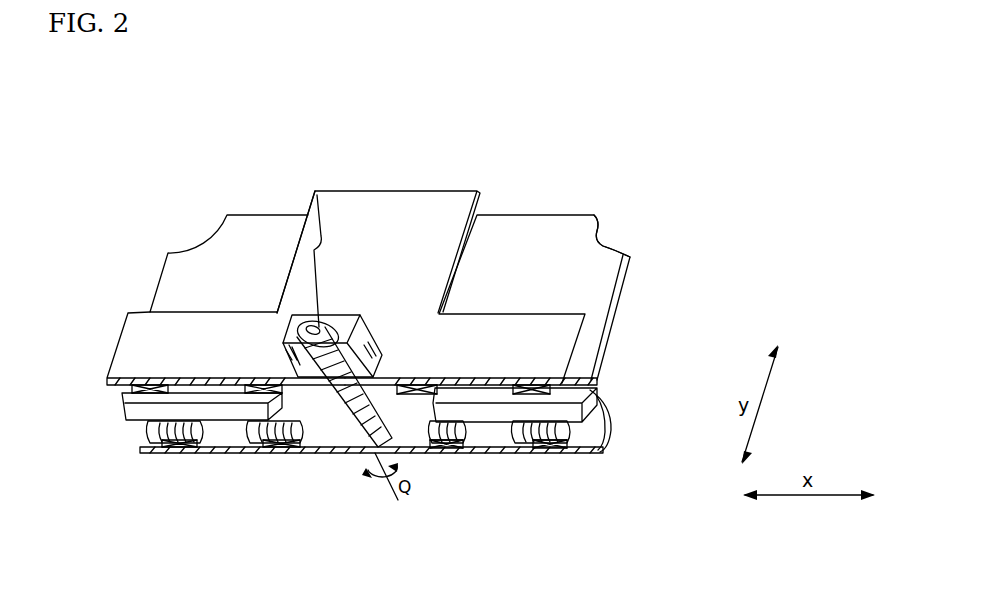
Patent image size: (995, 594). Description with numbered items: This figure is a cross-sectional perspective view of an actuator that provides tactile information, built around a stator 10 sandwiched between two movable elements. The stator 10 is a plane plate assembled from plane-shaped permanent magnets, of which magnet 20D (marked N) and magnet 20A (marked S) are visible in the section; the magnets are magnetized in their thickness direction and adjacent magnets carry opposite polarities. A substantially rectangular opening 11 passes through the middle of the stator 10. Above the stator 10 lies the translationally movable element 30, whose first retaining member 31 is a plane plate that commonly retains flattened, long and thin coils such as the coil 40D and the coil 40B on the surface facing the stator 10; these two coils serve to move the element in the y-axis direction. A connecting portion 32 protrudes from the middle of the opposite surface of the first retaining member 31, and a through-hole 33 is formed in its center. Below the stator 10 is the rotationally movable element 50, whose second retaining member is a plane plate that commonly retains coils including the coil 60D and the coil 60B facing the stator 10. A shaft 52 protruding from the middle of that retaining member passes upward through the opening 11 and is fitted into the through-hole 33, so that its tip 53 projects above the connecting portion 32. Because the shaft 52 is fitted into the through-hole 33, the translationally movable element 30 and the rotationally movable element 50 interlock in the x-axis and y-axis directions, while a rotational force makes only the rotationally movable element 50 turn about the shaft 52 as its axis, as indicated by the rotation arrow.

The stator 10 is at (568, 215).
The opening 11 is at (432, 448).
The permanent magnet 20A is at (607, 286).
The permanent magnet 20D is at (172, 278).
The translationally movable element 30 is at (413, 188).
The first retaining member 31 is at (380, 365).
The connecting portion 32 is at (337, 320).
The through-hole 33 is at (383, 355).
The coil 40B is at (565, 393).
The coil 40D is at (132, 388).
The rotationally movable element 50 is at (541, 455).
The shaft 52 is at (348, 430).
The tip 53 is at (317, 191).
The coil 60B is at (610, 432).
The coil 60D is at (183, 424).